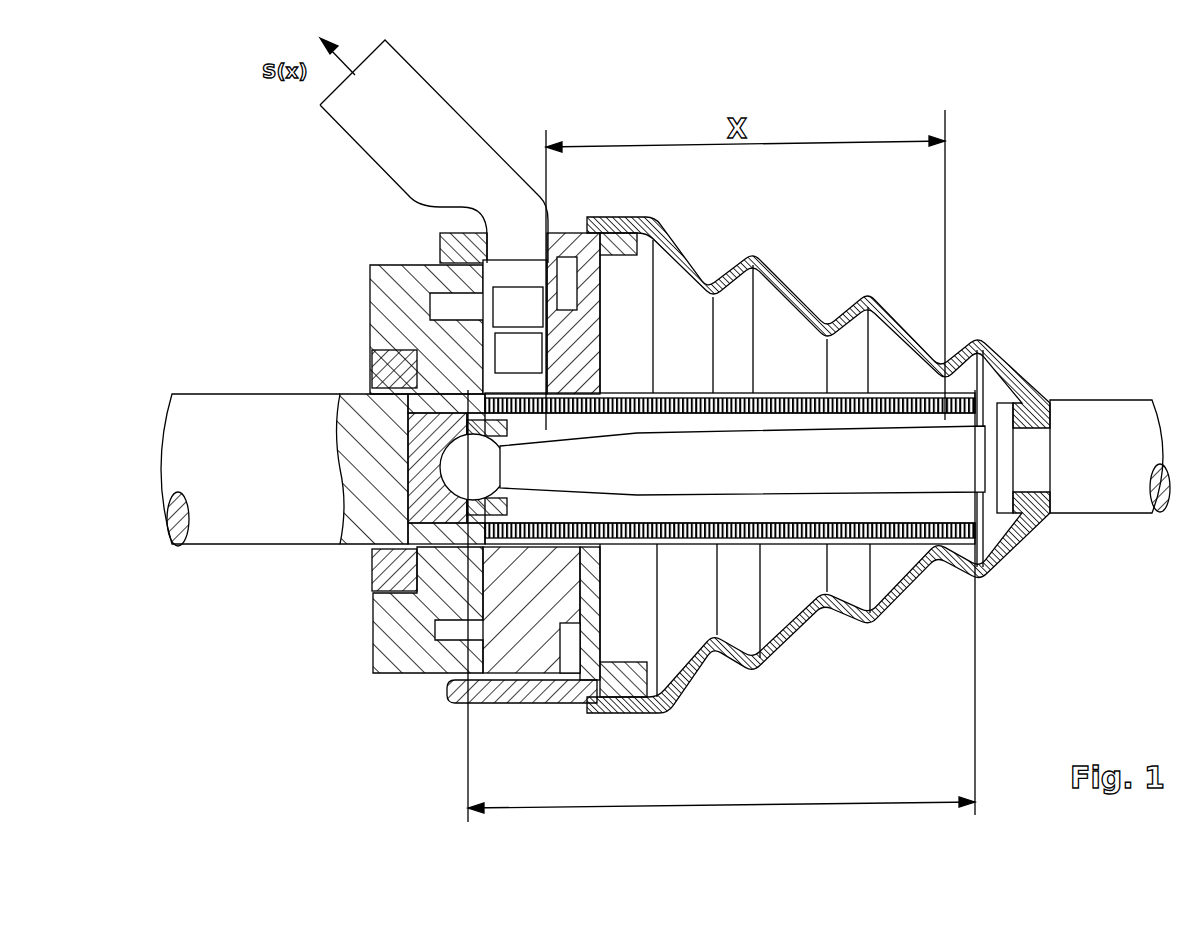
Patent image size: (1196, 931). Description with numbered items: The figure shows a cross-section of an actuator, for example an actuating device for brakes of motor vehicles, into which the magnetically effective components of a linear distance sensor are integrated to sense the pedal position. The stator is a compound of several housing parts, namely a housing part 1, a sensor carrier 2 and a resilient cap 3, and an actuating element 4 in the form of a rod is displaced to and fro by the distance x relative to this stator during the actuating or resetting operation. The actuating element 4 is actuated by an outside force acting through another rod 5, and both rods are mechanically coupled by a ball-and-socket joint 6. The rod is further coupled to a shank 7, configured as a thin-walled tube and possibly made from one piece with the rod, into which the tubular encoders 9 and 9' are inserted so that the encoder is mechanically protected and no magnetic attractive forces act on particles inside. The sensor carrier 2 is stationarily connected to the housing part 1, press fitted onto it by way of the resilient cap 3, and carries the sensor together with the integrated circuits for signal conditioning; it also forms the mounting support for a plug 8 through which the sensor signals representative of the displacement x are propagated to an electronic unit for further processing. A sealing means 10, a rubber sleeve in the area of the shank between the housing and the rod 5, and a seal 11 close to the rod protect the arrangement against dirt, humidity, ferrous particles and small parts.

The housing part 1 is at (383, 290).
The sensor carrier 2 is at (543, 640).
The resilient cap 3 is at (568, 240).
The actuating element 4 is at (200, 427).
The rod 5 is at (1088, 415).
The ball-and-socket joint 6 is at (437, 447).
The shank 7 is at (715, 805).
The plug 8 is at (447, 133).
The encoder 9 is at (730, 322).
The encoder 9' is at (730, 607).
The sealing means 10 is at (900, 600).
The seal 11 is at (372, 360).